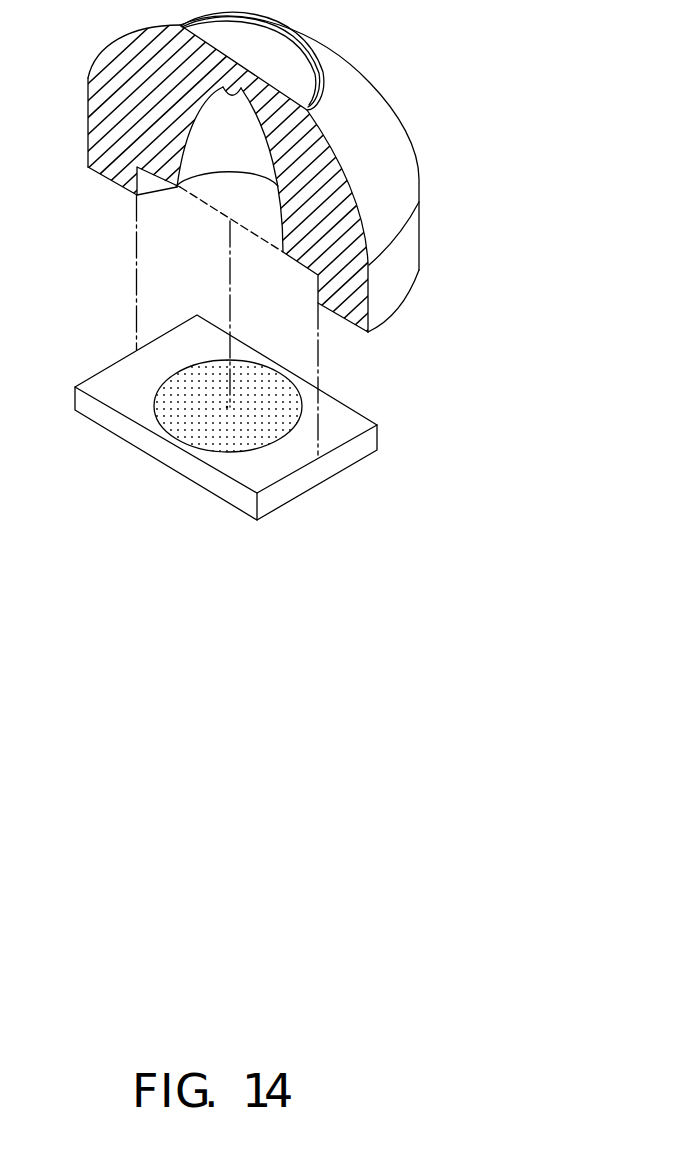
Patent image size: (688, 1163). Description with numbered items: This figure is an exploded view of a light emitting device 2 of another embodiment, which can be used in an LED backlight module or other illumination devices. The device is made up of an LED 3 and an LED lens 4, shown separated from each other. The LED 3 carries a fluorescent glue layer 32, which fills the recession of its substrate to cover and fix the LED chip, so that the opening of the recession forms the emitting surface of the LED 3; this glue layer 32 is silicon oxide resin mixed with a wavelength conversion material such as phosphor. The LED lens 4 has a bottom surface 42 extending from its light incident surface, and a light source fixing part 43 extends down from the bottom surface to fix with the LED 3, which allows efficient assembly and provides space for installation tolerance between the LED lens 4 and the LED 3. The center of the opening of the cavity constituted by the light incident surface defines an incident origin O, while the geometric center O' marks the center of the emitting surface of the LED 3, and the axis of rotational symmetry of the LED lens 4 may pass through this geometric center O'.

The light emitting device 2 is at (305, 270).
The LED 3 is at (113, 420).
The fluorescent glue layer 32 is at (267, 428).
The LED lens 4 is at (360, 110).
The bottom surface 42 is at (298, 261).
The light source fixing part 43 is at (113, 170).
The incident origin O is at (228, 325).
The geometric center of the emitting surface O' is at (189, 462).